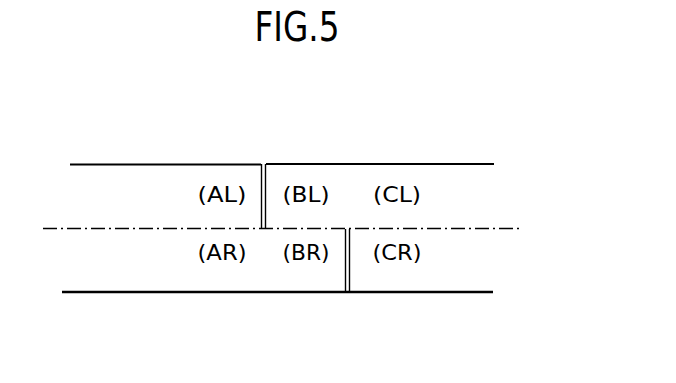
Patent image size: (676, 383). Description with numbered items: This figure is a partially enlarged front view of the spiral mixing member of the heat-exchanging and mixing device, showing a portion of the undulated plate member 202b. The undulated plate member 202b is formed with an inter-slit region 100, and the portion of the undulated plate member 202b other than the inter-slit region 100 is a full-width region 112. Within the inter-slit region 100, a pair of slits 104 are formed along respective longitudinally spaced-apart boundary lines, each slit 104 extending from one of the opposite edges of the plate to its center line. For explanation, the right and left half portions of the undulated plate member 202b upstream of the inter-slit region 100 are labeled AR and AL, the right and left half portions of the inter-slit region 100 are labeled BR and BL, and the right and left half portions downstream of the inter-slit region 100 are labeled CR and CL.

The full-width region 112 is at (156, 161).
The inter-slit region 100 is at (331, 161).
The slit 104 is at (347, 294).
The undulated plate member 202b is at (465, 296).